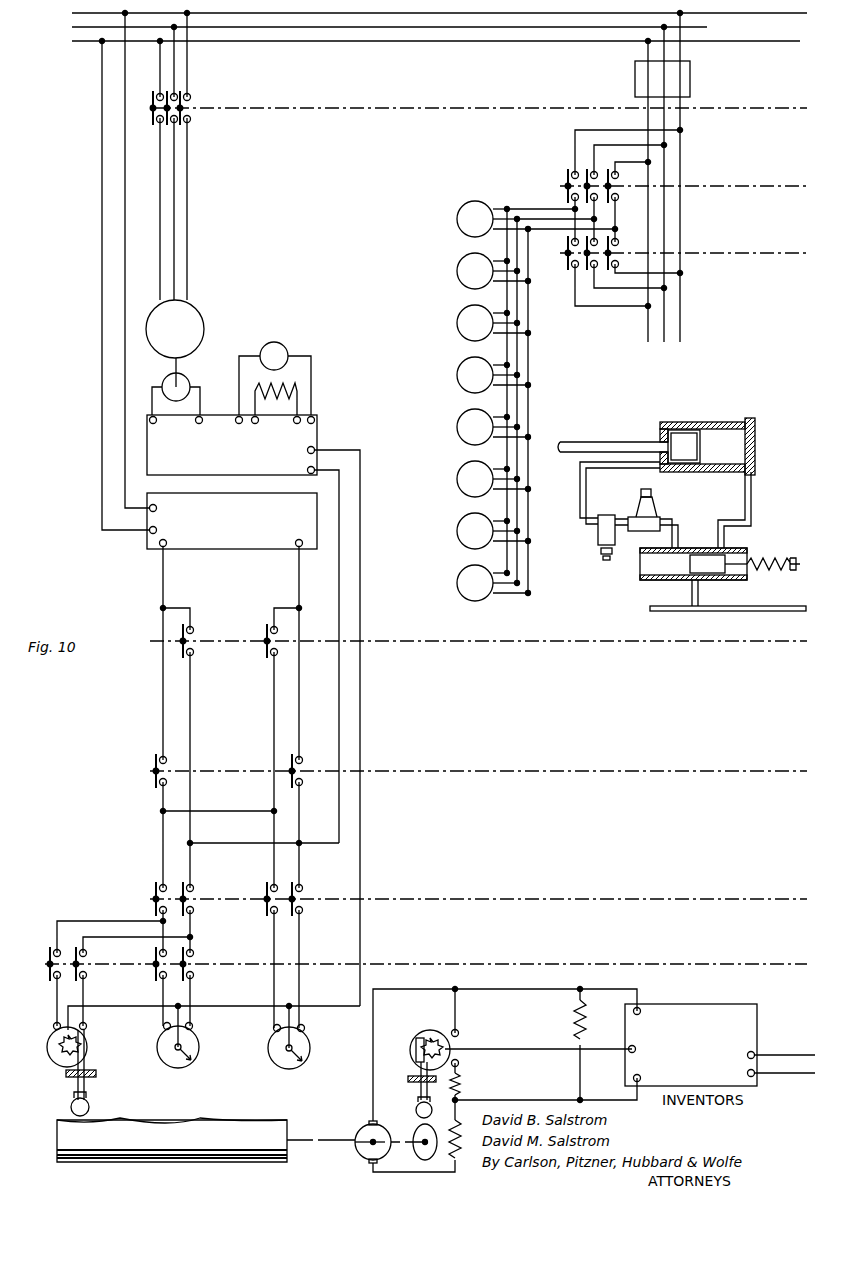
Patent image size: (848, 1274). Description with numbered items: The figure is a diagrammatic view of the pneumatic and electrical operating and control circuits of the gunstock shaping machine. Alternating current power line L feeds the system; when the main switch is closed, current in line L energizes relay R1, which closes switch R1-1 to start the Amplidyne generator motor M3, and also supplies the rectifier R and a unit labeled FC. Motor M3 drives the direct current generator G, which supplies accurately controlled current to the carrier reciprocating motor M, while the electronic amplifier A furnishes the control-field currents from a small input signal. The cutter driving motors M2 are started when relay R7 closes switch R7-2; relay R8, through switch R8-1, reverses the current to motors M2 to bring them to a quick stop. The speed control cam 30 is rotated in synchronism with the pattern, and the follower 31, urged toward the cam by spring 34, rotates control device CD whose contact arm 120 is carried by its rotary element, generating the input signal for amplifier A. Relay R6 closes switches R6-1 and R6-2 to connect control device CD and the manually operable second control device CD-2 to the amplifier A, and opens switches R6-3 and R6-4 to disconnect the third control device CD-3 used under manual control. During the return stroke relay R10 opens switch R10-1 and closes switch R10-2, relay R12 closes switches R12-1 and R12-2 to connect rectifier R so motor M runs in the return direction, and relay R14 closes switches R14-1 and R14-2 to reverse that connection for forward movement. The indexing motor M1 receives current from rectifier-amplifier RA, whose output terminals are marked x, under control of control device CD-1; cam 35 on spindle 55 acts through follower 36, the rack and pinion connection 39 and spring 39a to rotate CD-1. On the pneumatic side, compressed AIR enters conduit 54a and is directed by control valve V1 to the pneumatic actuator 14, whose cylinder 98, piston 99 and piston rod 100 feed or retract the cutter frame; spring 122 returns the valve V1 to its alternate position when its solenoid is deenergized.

The alternating current power line L is at (322, 15).
The switch R1-1 is at (200, 102).
The relay R1 is at (478, 100).
The frequency changer FC is at (635, 72).
The switch R7-2 is at (567, 164).
The relay R7 is at (683, 178).
The switch R8-1 is at (571, 276).
The relay R8 is at (683, 245).
The cutter driving motors M2 is at (464, 228).
The motor M3 is at (194, 318).
The direct current generator G is at (190, 382).
The carrier reciprocating motor M is at (285, 348).
The electronic amplifier A is at (312, 440).
The rectifier R is at (250, 548).
The switch R12-1 is at (200, 651).
The switch R12-2 is at (275, 619).
The relay R12 is at (481, 633).
The switch R14-1 is at (157, 749).
The switch R14-2 is at (290, 751).
The relay R14 is at (481, 763).
The switch R6-1 is at (157, 879).
The switch R6-2 is at (204, 890).
The switch R6-3 is at (312, 887).
The switch R6-4 is at (266, 909).
The relay R6 is at (478, 891).
The switch R10-1 is at (94, 973).
The switch R10-2 is at (202, 955).
The control relay R10 is at (429, 956).
The control device CD is at (93, 1043).
The contact arm 120 is at (60, 1057).
The spring 34 is at (72, 1077).
The follower 31 is at (71, 1106).
The speed control cam 30 is at (190, 1128).
The second control device CD-2 is at (161, 1069).
The third control device CD-3 is at (302, 1071).
The indexing motor M1 is at (358, 1131).
The spindle 55 is at (321, 1154).
The cam 35 is at (411, 1148).
The control device CD-1 is at (427, 1024).
The rack and pinion connection 39 is at (410, 1057).
The spring 39a is at (414, 1082).
The follower 36 is at (415, 1110).
The rectifier-amplifier RA is at (701, 1012).
The terminals x is at (785, 1056).
The pneumatic actuator 14 is at (763, 412).
The cylinder 98 is at (736, 426).
The piston 99 is at (688, 432).
The piston rod 100 is at (588, 441).
The control valve V1 is at (755, 543).
The spring 122 is at (774, 560).
The conduit 54a is at (746, 612).
The air supply AIR is at (620, 611).